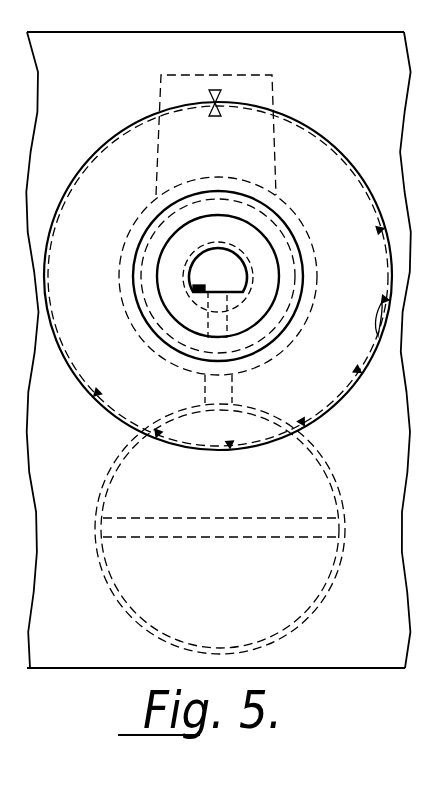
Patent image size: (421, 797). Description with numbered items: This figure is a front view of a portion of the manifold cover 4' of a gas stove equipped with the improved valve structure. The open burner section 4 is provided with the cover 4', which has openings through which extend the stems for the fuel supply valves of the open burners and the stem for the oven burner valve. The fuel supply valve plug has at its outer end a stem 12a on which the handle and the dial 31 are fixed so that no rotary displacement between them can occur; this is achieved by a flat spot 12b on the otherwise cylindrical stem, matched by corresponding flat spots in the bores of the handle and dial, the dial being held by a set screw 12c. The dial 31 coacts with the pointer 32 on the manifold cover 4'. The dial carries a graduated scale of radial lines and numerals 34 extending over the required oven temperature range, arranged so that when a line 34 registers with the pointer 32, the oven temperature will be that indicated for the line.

The open burner section 4 is at (205, 350).
The manifold cover 4' is at (173, 529).
The stem 12a is at (210, 258).
The flat spot 12b is at (198, 290).
The set screw 12c is at (234, 300).
The dial 31 is at (306, 147).
The pointer 32 is at (218, 92).
The radial lines and numerals 34 is at (305, 426).